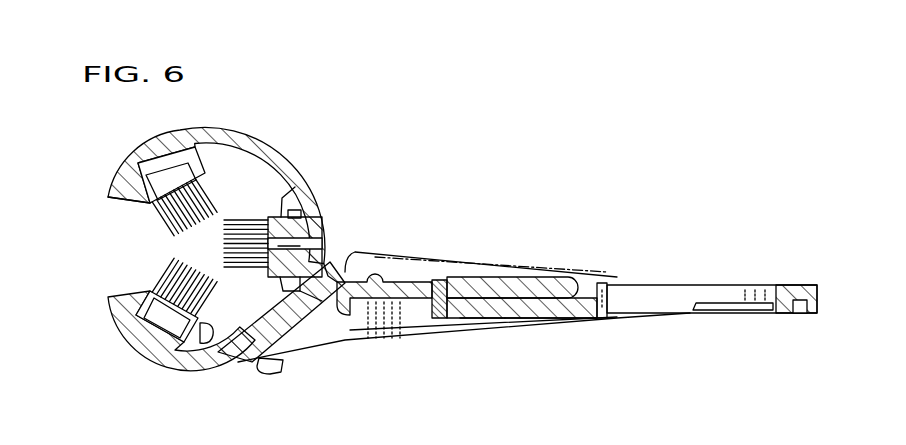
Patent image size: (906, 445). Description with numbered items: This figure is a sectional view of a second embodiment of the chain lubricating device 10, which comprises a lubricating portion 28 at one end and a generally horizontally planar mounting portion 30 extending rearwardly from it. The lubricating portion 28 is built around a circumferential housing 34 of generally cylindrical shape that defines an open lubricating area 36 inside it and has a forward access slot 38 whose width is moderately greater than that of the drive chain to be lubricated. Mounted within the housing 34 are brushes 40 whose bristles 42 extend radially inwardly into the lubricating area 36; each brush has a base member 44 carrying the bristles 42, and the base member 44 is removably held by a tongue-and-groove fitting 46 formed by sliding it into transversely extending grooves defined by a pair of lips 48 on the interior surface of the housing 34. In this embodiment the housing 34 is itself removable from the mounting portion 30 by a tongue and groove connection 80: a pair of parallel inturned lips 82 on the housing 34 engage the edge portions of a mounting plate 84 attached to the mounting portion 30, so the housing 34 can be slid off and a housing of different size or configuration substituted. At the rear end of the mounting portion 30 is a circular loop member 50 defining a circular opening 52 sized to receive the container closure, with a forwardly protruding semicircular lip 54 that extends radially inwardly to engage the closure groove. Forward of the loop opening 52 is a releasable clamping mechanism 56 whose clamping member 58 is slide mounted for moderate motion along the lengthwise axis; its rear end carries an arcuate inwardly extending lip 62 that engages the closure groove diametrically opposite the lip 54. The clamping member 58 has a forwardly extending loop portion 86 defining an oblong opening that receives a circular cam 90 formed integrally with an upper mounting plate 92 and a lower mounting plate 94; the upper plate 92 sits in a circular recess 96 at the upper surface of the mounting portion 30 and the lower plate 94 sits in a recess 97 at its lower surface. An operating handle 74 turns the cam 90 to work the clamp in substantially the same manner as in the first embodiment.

The device 10 is at (519, 211).
The lubricating portion 28 is at (319, 184).
The mounting portion 30 is at (609, 263).
The circumferential housing 34 is at (240, 137).
The lubricating area 36 is at (210, 252).
The access slot 38 is at (118, 213).
The brushes 40 is at (153, 226).
The bristles 42 is at (247, 224).
The base member 44 is at (160, 160).
The tongue-and-groove fitting 46 is at (140, 167).
The lips 48 is at (130, 287).
The circular loop member 50 is at (802, 283).
The circular opening 52 is at (707, 288).
The semicircular lip 54 is at (733, 302).
The releasable clamping mechanism 56 is at (527, 334).
The clamping member 58 is at (600, 280).
The arcuate lip 62 is at (618, 313).
The operating handle 74 is at (398, 255).
The tongue and groove connection 80 is at (310, 333).
The inturned lips 82 is at (340, 280).
The mounting plate 84 is at (313, 318).
The loop portion 86 is at (493, 310).
The circular cam 90 is at (512, 310).
The upper mounting plate 92 is at (520, 280).
The lower mounting plate 94 is at (473, 312).
The circular recess 96 is at (455, 280).
The recess 97 is at (450, 333).